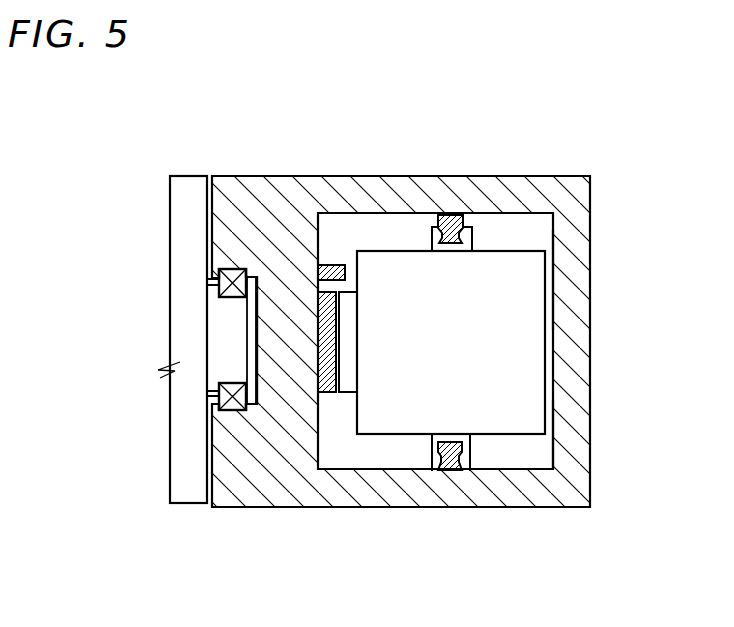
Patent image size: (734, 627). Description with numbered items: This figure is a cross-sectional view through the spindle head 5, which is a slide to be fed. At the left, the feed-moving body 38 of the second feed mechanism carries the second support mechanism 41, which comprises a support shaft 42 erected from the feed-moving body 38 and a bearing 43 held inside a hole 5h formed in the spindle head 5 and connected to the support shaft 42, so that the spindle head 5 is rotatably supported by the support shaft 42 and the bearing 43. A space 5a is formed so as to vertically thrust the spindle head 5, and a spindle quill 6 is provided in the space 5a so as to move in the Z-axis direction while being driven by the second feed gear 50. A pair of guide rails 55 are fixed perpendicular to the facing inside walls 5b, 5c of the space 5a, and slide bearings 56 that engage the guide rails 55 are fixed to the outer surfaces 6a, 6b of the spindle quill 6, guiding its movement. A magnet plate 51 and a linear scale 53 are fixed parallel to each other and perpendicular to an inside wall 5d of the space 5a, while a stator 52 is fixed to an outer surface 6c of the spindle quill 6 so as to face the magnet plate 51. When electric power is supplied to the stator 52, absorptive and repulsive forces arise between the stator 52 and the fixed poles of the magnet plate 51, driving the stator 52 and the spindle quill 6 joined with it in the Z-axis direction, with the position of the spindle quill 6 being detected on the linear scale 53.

The spindle head 5 is at (592, 392).
The space 5a is at (533, 241).
The inside wall 5b is at (533, 217).
The inside wall 5c is at (532, 465).
The inside wall 5d is at (318, 456).
The hole 5h is at (254, 268).
The spindle quill 6 is at (533, 340).
The outer surface 6a is at (502, 248).
The outer surface 6b is at (517, 436).
The outer surface 6c is at (346, 420).
The feed-moving body 38 is at (180, 312).
The second support mechanism 41 is at (183, 391).
The support shaft 42 is at (213, 355).
The bearing 43 is at (208, 282).
The second feed gear 50 is at (410, 128).
The magnet plate 51 is at (333, 358).
The stator 52 is at (352, 313).
The linear scale 53 is at (324, 265).
The guide rail 55 is at (448, 215).
The slide bearing 56 is at (466, 228).